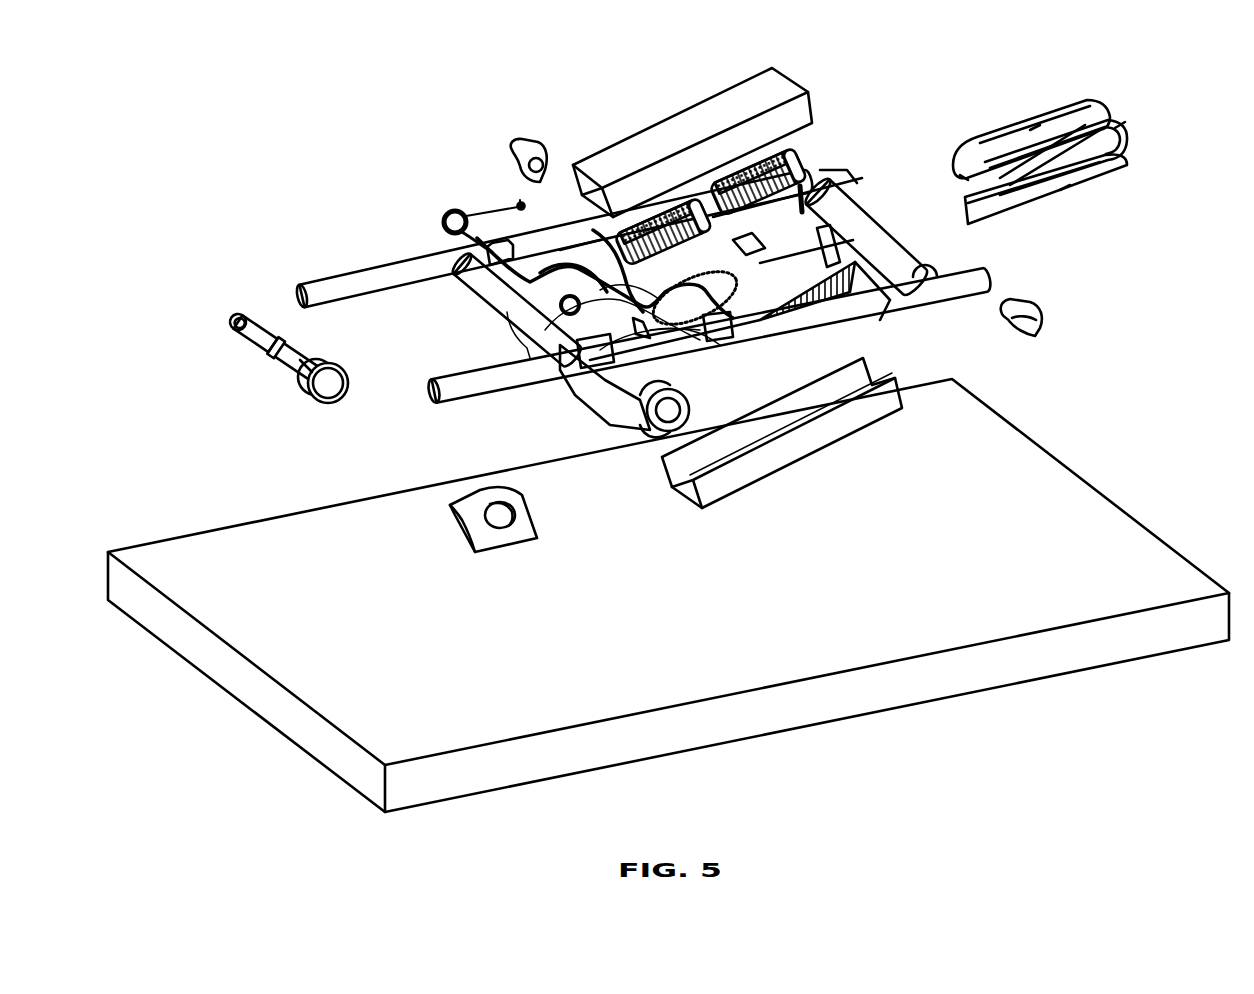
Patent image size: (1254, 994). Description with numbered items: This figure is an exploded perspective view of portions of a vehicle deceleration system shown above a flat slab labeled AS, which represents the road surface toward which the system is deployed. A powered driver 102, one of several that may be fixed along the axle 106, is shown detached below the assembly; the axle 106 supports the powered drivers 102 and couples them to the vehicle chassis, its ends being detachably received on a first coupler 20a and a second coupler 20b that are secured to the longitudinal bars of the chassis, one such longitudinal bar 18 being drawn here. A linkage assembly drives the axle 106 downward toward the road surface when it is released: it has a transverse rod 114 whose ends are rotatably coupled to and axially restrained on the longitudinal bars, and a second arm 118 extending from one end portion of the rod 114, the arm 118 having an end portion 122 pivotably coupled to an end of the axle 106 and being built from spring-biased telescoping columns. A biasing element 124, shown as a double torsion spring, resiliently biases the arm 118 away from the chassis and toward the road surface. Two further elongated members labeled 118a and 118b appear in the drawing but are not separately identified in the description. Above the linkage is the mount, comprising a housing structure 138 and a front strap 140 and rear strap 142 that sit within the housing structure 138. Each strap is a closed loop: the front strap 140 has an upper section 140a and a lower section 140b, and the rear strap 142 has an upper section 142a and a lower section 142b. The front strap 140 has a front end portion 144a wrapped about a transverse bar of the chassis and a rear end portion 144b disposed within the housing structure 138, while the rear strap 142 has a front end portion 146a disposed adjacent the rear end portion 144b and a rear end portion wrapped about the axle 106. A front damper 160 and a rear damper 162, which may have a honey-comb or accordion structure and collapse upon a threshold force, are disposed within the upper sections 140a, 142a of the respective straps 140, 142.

The longitudinal bar 18 is at (860, 224).
The first coupler 20a is at (528, 148).
The second coupler 20b is at (770, 322).
The powered driver 102 is at (543, 508).
The axle 106 is at (650, 425).
The transverse rod 114 is at (498, 285).
The second arm 118 is at (252, 378).
The rod 118a is at (332, 274).
The rod 118b is at (950, 290).
The end portion 122 is at (323, 362).
The biasing element 124 is at (447, 220).
The housing structure 138 is at (763, 82).
The front strap 140 is at (958, 106).
The upper section 140a is at (1057, 114).
The lower section 140b is at (1070, 168).
The rear strap 142 is at (720, 355).
The upper section 142a is at (708, 287).
The lower section 142b is at (700, 373).
The front end portion 144a is at (1130, 136).
The rear end portion 144b is at (960, 180).
The front end portion 146a is at (875, 315).
The front damper 160 is at (806, 168).
The rear damper 162 is at (693, 185).
The attachment surface AS is at (1085, 514).